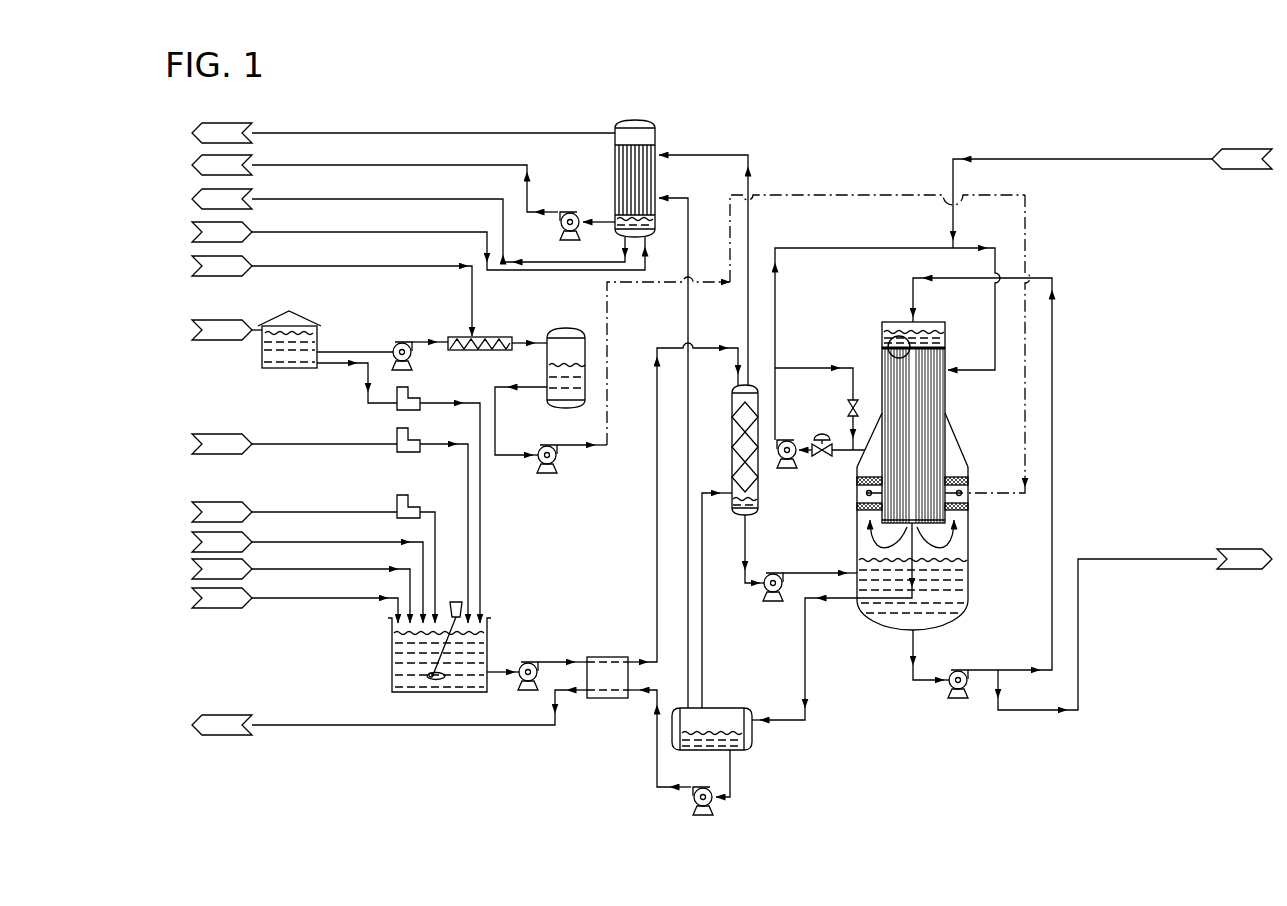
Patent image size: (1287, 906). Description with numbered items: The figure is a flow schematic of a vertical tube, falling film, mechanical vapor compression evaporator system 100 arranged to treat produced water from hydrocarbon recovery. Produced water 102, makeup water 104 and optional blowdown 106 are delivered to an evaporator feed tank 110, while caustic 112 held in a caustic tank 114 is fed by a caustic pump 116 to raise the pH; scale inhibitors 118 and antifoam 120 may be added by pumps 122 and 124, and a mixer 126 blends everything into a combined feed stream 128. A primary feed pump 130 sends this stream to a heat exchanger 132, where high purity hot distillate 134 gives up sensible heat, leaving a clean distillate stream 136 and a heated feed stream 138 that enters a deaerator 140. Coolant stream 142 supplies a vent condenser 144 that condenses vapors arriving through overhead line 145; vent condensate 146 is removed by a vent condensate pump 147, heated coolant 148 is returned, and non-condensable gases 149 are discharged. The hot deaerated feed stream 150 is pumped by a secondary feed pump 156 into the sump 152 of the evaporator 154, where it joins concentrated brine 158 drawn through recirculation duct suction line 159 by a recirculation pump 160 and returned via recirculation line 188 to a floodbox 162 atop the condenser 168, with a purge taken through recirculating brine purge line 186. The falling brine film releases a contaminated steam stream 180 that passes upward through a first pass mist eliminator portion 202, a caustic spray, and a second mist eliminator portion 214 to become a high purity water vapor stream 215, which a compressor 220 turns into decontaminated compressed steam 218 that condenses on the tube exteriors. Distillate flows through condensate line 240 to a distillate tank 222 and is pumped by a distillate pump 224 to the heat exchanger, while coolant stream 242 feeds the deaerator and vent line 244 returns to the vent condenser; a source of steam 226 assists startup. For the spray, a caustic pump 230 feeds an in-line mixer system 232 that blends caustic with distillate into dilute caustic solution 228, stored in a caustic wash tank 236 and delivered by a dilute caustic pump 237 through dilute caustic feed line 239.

The evaporator system 100 is at (886, 125).
The produced water 102 is at (295, 604).
The makeup water 104 is at (301, 590).
The blowdown 106 is at (307, 576).
The evaporator feed tank 110 is at (392, 655).
The caustic 112 is at (227, 330).
The caustic tank 114 is at (262, 355).
The caustic pump 116 is at (413, 392).
The scale inhibitors 118 is at (294, 444).
The antifoam 120 is at (294, 512).
The pump 122 is at (413, 432).
The pump 124 is at (413, 497).
The mixer 126 is at (437, 658).
The combined feed stream 128 is at (502, 662).
The primary feed pump 130 is at (523, 690).
The heat exchanger 132 is at (603, 657).
The high purity hot distillate 134 is at (657, 750).
The clean distillate stream 136 is at (389, 496).
The heated feed stream 138 is at (657, 622).
The deaerator 140 is at (732, 468).
The coolant stream 142 is at (418, 245).
The vent condenser 144 is at (656, 144).
The overhead line 145 is at (752, 232).
The vent condensate 146 is at (375, 182).
The vent condensate pump 147 is at (571, 212).
The heated coolant 148 is at (408, 224).
The non-condensable gases 149 is at (403, 133).
The hot deaerated feed stream 150 is at (745, 547).
The sump 152 is at (968, 607).
The evaporator 154 is at (848, 542).
The secondary feed pump 156 is at (773, 602).
The concentrated brine 158 is at (948, 588).
The recirculation duct suction line 159 is at (922, 682).
The recirculation pump 160 is at (960, 700).
The floodbox 162 is at (917, 323).
The condenser 168 is at (946, 390).
The contaminated steam stream 180 is at (957, 542).
The recirculating brine purge line 186 is at (1135, 628).
The recirculation line 188 is at (1053, 503).
The first pass mist eliminator portion 202 is at (970, 507).
The second mist eliminator portion 214 is at (968, 467).
The high purity water vapor stream 215 is at (840, 447).
The decontaminated compressed steam 218 is at (778, 308).
The compressor 220 is at (787, 468).
The distillate tank 222 is at (752, 735).
The distillate pump 224 is at (701, 816).
The source of steam 226 is at (1112, 197).
The dilute caustic solution 228 is at (547, 375).
The caustic pump 230 is at (401, 342).
The in-line mixer system 232 is at (510, 337).
The caustic wash tank 236 is at (547, 400).
The dilute caustic pump 237 is at (556, 462).
The dilute caustic feed line 239 is at (982, 493).
The condensate line 240 is at (806, 653).
The coolant stream 242 is at (702, 672).
The vent line 244 is at (688, 548).